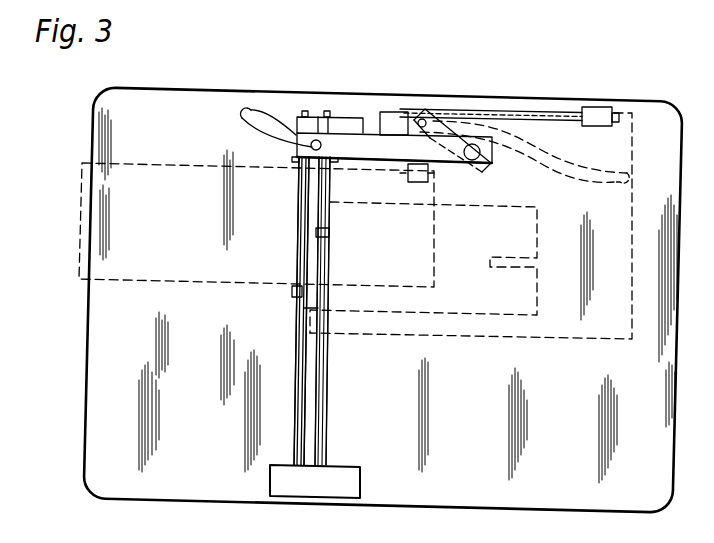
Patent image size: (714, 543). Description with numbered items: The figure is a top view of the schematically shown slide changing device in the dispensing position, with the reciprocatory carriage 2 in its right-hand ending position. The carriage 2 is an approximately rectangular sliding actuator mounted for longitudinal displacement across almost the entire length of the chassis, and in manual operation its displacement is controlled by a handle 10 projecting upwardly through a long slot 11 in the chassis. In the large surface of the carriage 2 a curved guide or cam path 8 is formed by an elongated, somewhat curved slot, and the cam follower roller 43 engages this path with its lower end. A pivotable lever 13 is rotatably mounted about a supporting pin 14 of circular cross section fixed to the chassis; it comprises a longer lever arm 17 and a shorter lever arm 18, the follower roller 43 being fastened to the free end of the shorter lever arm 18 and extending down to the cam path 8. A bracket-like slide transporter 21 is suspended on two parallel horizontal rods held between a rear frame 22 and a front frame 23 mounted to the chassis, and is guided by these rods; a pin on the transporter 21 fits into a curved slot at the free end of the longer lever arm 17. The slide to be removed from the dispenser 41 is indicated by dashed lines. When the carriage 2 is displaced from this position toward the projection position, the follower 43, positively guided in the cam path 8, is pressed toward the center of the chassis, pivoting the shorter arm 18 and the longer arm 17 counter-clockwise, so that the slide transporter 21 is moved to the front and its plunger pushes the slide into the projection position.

The reciprocatory carriage 2 is at (490, 330).
The curved guide or cam path 8 is at (606, 175).
The handle 10 is at (603, 110).
The long slot 11 is at (570, 113).
The pivotable lever 13 is at (393, 127).
The supporting pin 14 is at (480, 158).
The longer lever arm 17 is at (376, 143).
The shorter lever arm 18 is at (447, 133).
The slide transporter 21 is at (318, 232).
The rear frame 22 is at (340, 122).
The front frame 23 is at (326, 492).
The dispenser 41 is at (200, 172).
The cam follower roller 43 is at (424, 119).